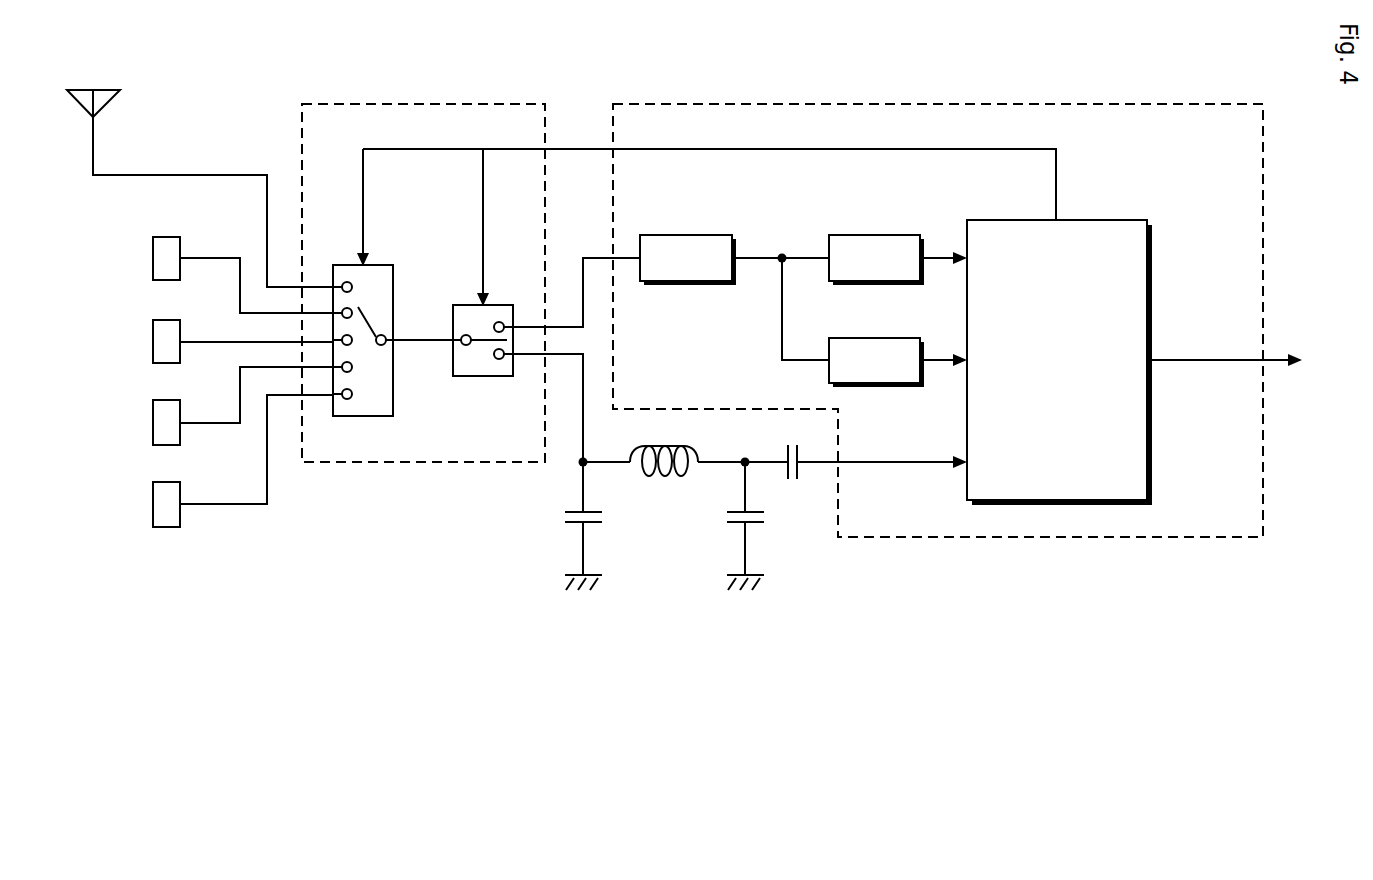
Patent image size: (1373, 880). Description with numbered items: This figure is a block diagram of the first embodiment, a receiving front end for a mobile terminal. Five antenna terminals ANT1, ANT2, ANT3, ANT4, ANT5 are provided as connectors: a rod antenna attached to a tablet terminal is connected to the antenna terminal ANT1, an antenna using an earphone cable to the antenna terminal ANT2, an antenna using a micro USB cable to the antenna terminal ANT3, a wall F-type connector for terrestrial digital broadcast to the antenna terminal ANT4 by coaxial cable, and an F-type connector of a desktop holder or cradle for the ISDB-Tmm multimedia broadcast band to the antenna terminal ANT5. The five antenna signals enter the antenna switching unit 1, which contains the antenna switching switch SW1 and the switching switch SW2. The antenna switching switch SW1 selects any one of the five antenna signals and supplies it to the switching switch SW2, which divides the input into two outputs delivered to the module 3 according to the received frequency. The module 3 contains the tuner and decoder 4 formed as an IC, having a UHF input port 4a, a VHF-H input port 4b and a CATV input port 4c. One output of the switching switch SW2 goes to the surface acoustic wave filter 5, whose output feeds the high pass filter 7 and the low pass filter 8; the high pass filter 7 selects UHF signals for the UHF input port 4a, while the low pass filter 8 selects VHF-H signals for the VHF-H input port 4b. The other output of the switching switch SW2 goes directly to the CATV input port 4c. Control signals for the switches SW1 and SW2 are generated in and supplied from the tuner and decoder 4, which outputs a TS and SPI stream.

The antenna switching unit 1 is at (420, 104).
The module 3 is at (935, 104).
The tuner and decoder 4 is at (1100, 220).
The UHF input port 4a is at (958, 254).
The VHF-H input port 4b is at (958, 356).
The CATV input port 4c is at (958, 458).
The surface acoustic wave filter 5 is at (674, 234).
The high pass filter 7 is at (861, 234).
The low pass filter 8 is at (861, 337).
The antenna terminal ANT1 is at (110, 90).
The antenna terminal ANT2 is at (153, 258).
The antenna terminal ANT3 is at (153, 342).
The antenna terminal ANT4 is at (153, 423).
The antenna terminal ANT5 is at (153, 504).
The antenna switching switch SW1 is at (393, 395).
The switching switch SW2 is at (484, 377).